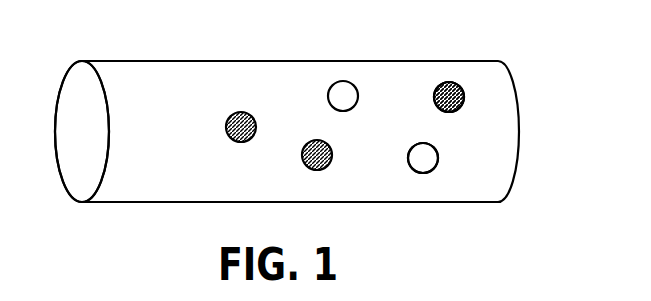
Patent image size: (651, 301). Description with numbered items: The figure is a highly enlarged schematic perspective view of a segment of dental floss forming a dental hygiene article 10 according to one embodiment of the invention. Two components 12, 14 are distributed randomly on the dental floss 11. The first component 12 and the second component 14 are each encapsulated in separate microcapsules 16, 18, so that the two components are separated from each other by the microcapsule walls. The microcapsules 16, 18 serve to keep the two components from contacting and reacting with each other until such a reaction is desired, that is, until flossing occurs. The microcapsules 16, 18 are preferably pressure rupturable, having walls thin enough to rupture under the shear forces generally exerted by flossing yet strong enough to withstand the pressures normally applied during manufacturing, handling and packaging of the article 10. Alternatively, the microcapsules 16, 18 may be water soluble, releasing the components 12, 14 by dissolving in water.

The dental hygiene article 10 is at (212, 42).
The dental floss 11 is at (135, 181).
The first component 12 is at (420, 167).
The second component 14 is at (463, 100).
The microcapsule 16 is at (448, 153).
The microcapsule 18 is at (474, 80).